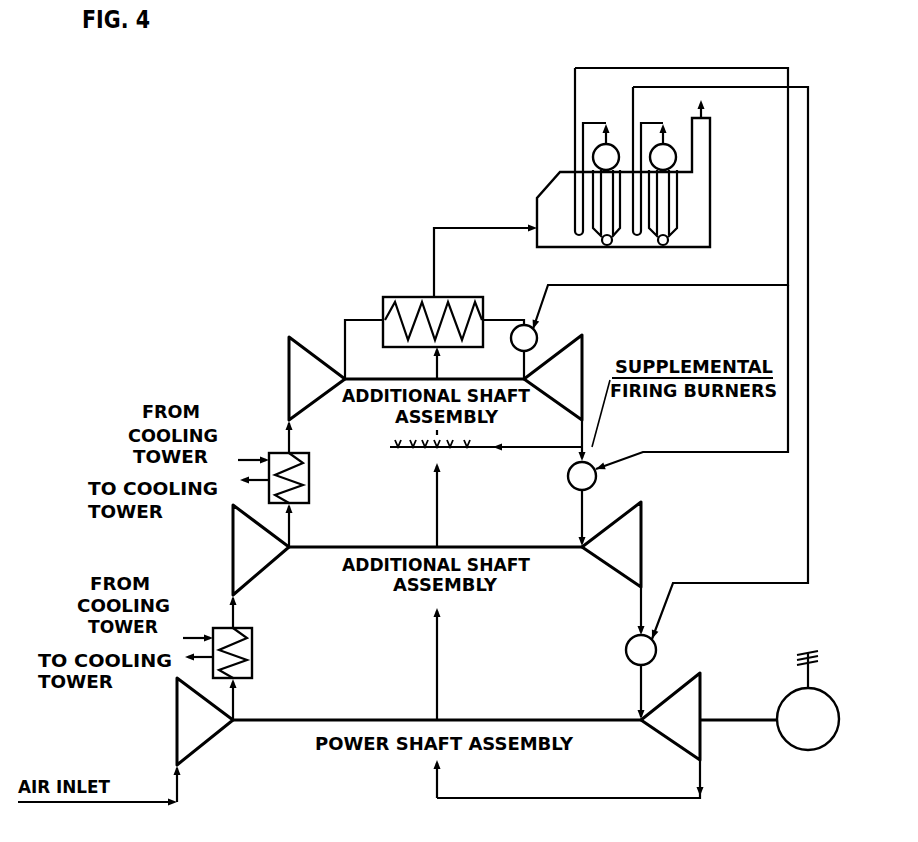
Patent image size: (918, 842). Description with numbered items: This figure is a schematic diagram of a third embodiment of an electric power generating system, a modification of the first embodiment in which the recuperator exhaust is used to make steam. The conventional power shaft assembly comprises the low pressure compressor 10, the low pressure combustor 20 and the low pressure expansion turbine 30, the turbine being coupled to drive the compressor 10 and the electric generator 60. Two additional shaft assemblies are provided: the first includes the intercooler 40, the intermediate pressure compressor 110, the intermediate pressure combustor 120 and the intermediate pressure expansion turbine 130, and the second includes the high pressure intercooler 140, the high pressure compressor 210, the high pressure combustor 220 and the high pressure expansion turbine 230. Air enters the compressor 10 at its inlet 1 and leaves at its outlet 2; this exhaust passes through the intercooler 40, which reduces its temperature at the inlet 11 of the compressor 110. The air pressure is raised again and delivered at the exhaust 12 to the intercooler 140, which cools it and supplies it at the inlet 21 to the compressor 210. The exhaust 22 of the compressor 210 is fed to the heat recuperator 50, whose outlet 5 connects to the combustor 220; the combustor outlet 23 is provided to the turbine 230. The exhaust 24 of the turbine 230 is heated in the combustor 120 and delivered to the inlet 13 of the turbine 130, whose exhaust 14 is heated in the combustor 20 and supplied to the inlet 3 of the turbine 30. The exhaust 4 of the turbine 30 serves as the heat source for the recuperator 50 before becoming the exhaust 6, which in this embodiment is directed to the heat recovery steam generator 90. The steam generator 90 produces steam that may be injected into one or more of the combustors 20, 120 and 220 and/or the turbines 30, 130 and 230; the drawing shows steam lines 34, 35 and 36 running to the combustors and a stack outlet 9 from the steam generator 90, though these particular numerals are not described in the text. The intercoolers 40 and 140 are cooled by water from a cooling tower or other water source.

The inlet 1 is at (179, 790).
The outlet 2 is at (235, 704).
The inlet 3 is at (638, 687).
The exhaust 4 is at (603, 803).
The outlet 5 is at (506, 311).
The system exhaust 6 is at (438, 277).
The stack outlet 9 is at (702, 111).
The low pressure compressor 10 is at (175, 723).
The inlet 11 is at (235, 610).
The exhaust 12 is at (298, 530).
The inlet 13 is at (580, 513).
The exhaust 14 is at (638, 610).
The low pressure combustor 20 is at (656, 646).
The inlet 21 is at (292, 445).
The exhaust 22 is at (348, 343).
The outlet 23 is at (523, 364).
The exhaust 24 is at (578, 439).
The low pressure expansion turbine 30 is at (702, 692).
The steam injection line to combustor 120 34 is at (738, 450).
The steam injection line to combustor 20 35 is at (697, 583).
The steam injection line to combustor 220 36 is at (705, 285).
The intercooler 40 is at (252, 650).
The heat recuperator 50 is at (480, 296).
The electric generator 60 is at (832, 690).
The heat recovery steam generator 90 is at (543, 192).
The intermediate pressure compressor 110 is at (232, 545).
The intermediate pressure combustor 120 is at (597, 484).
The intermediate pressure expansion turbine 130 is at (642, 527).
The high pressure intercooler 140 is at (309, 482).
The high pressure compressor 210 is at (287, 382).
The high pressure combustor 220 is at (556, 324).
The high pressure expansion turbine 230 is at (583, 358).